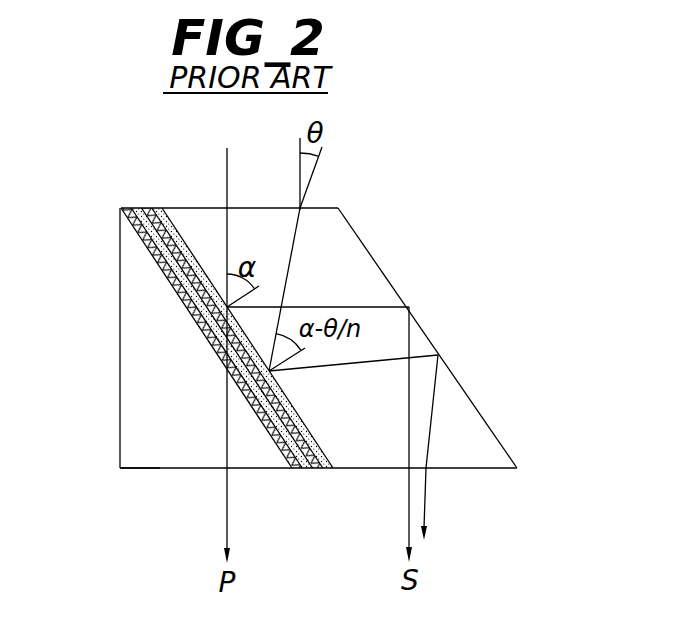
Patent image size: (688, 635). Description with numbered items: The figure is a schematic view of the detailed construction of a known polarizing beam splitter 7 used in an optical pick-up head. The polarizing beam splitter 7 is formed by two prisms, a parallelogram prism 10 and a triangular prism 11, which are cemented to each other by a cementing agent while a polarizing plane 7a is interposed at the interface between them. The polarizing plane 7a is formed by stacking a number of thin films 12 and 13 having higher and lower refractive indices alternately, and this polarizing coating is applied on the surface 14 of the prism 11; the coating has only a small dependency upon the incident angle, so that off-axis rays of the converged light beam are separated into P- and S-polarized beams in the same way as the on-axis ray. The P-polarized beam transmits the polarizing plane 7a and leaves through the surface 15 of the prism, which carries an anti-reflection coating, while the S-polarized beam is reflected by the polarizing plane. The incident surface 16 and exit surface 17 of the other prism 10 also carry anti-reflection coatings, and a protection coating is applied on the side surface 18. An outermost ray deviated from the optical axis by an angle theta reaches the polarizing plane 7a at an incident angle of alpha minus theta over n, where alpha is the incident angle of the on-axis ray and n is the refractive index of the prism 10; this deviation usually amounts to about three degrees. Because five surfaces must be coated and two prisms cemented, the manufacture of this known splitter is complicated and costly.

The polarizing beam splitter 7 is at (301, 337).
The polarizing plane 7a is at (211, 337).
The parallelogram prism 10 is at (356, 336).
The triangular prism 11 is at (135, 335).
The thin film 12 is at (293, 468).
The thin film 13 is at (307, 468).
The surface of the prism 14 is at (211, 367).
The surface of the prism 15 is at (140, 468).
The incident surface 16 is at (328, 207).
The exit surface 17 is at (482, 468).
The side surface 18 is at (487, 422).